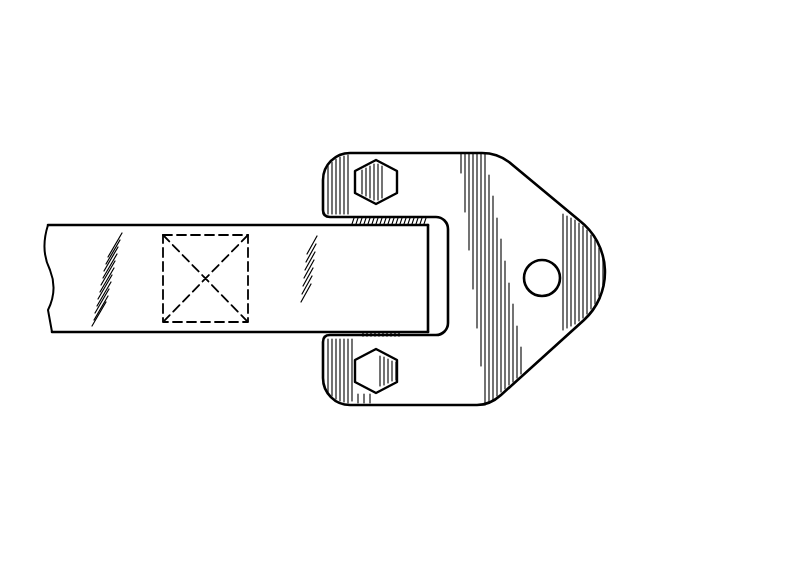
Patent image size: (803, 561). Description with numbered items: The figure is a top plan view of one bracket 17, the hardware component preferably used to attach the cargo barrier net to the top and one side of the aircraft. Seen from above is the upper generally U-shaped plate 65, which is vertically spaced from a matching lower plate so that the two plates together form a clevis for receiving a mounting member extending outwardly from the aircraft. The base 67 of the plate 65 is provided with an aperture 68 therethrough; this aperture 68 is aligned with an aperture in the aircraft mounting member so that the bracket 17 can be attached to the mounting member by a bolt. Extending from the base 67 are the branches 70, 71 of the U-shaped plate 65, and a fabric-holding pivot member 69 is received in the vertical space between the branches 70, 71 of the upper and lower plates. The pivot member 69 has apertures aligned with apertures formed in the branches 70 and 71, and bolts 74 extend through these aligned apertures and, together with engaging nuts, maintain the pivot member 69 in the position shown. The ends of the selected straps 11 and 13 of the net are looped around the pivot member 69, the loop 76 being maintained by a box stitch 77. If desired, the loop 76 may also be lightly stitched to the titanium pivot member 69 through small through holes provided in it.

The bracket 17 is at (525, 155).
The upper generally U-shaped plate 65 is at (558, 198).
The base 67 is at (577, 277).
The aperture 68 is at (542, 285).
The fabric-holding pivot member 69 is at (325, 217).
The branch 70 is at (436, 177).
The branch 71 is at (425, 380).
The bolt 74 is at (368, 165).
The loop 76 is at (408, 312).
The box stitch 77 is at (202, 255).
The strap 11 is at (302, 299).
The strap 13 is at (108, 308).